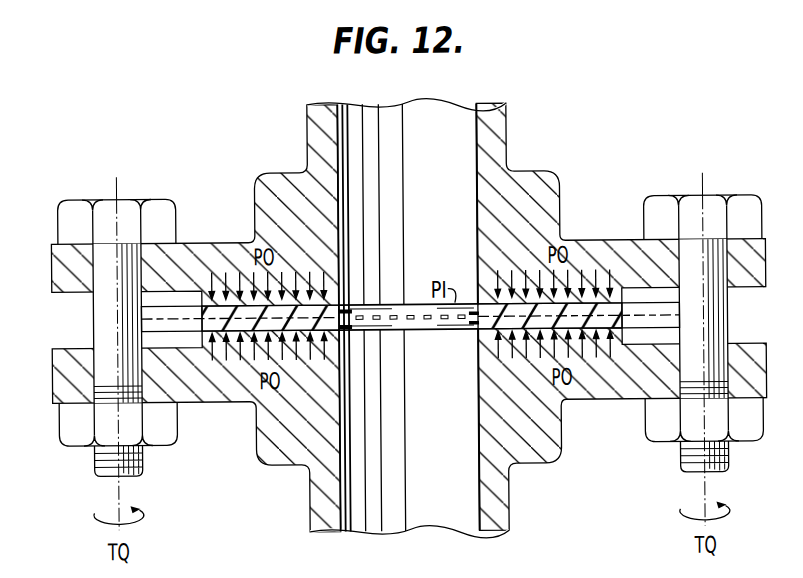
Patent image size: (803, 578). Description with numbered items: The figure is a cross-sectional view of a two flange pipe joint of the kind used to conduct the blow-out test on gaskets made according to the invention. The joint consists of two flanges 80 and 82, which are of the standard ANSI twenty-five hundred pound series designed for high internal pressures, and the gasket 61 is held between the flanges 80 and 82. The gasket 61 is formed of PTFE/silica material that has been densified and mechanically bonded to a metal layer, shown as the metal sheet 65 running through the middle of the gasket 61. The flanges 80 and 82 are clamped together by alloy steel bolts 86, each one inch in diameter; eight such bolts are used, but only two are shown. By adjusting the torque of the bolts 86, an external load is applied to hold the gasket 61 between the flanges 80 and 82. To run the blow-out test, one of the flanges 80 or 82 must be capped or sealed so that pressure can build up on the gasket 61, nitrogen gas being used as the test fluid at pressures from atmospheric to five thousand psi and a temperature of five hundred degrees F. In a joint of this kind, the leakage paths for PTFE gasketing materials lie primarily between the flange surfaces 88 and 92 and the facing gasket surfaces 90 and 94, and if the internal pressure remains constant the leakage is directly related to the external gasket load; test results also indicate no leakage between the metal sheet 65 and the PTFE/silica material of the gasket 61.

The flange 80 is at (553, 195).
The flange 82 is at (272, 440).
The alloy steel bolts 86 is at (100, 327).
The flange surface 88 is at (348, 282).
The gasket surface 90 is at (348, 304).
The gasket 61 is at (421, 312).
The metal sheet 65 is at (410, 320).
The flange surface 92 is at (492, 334).
The gasket surface 94 is at (478, 329).